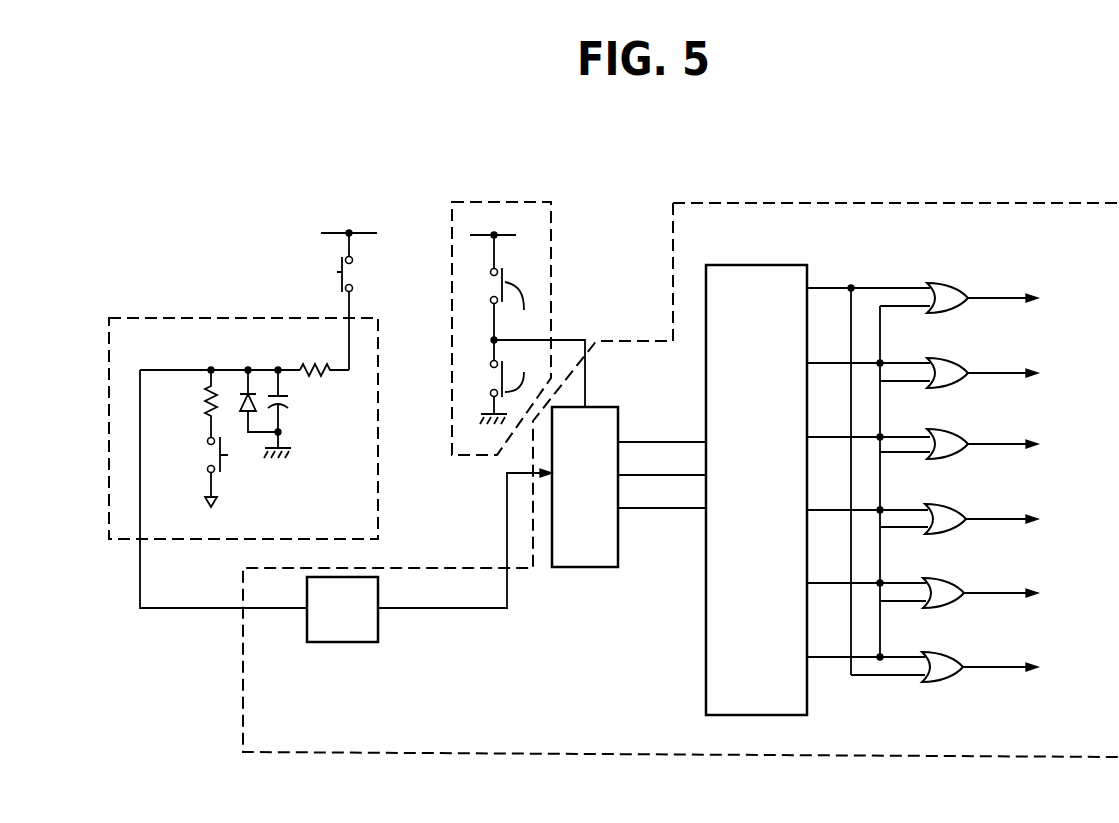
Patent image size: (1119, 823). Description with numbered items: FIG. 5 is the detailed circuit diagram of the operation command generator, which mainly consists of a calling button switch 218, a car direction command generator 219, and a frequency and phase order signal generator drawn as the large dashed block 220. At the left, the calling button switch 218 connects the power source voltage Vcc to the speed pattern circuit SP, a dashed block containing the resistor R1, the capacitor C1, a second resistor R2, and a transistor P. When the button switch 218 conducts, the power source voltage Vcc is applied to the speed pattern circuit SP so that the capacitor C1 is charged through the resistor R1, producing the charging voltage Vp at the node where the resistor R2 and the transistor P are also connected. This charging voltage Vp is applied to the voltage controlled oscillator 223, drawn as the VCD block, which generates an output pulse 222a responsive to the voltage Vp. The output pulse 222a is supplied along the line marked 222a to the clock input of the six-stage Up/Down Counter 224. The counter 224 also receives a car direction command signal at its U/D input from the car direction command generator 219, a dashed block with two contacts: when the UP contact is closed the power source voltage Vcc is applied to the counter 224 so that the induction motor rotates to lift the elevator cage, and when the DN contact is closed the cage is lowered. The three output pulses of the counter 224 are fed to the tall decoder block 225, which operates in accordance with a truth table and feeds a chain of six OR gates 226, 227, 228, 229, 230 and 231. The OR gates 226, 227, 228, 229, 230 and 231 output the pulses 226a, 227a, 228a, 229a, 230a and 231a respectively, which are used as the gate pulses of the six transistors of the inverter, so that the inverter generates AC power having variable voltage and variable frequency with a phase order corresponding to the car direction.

The speed pattern circuit SP is at (226, 317).
The resistor R1 is at (309, 365).
The resistor R2 is at (200, 400).
The capacitor C1 is at (290, 400).
The transistor P is at (221, 470).
The calling button switch 218 is at (356, 271).
The car direction command generator 219 is at (497, 200).
The control circuit 220 is at (886, 200).
The output pulse 222a is at (478, 618).
The voltage controlled oscillator 223 is at (345, 643).
The Up/Down Counter 224 is at (587, 568).
The decoder 225 is at (758, 265).
The OR gate 226 is at (951, 282).
The OR gate 227 is at (948, 360).
The OR gate 228 is at (948, 432).
The OR gate 229 is at (948, 506).
The OR gate 230 is at (948, 580).
The OR gate 231 is at (948, 654).
The output pulse 226a is at (1040, 303).
The output pulse 227a is at (1040, 376).
The output pulse 228a is at (1040, 449).
The output pulse 229a is at (1038, 522).
The output pulse 230a is at (1037, 595).
The output pulse 231a is at (1037, 670).